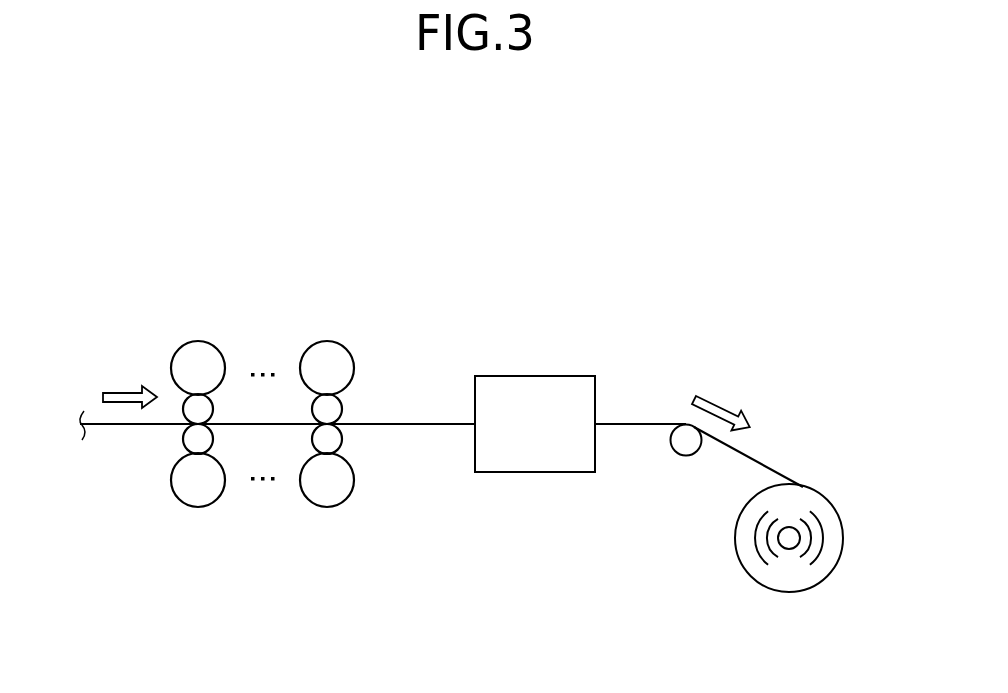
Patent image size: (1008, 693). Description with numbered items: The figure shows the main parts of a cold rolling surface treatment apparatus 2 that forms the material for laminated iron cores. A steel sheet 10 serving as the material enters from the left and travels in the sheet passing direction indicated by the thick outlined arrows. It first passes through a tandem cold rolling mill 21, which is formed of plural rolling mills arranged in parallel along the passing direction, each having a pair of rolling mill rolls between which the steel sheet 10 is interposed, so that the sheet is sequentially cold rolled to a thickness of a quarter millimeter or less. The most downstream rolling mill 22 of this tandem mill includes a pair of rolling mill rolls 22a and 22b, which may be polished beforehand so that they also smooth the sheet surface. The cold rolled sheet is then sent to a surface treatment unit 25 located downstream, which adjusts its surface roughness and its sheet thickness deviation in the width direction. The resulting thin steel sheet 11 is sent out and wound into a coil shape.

The cold rolling surface treatment apparatus 2 is at (599, 153).
The steel sheet 10 is at (110, 427).
The steel sheet 11 is at (776, 470).
The tandem cold rolling mill 21 is at (286, 434).
The most downstream rolling mill 22 is at (291, 477).
The rolling mill roll 22a is at (341, 406).
The rolling mill roll 22b is at (341, 440).
The surface treatment unit 25 is at (566, 376).